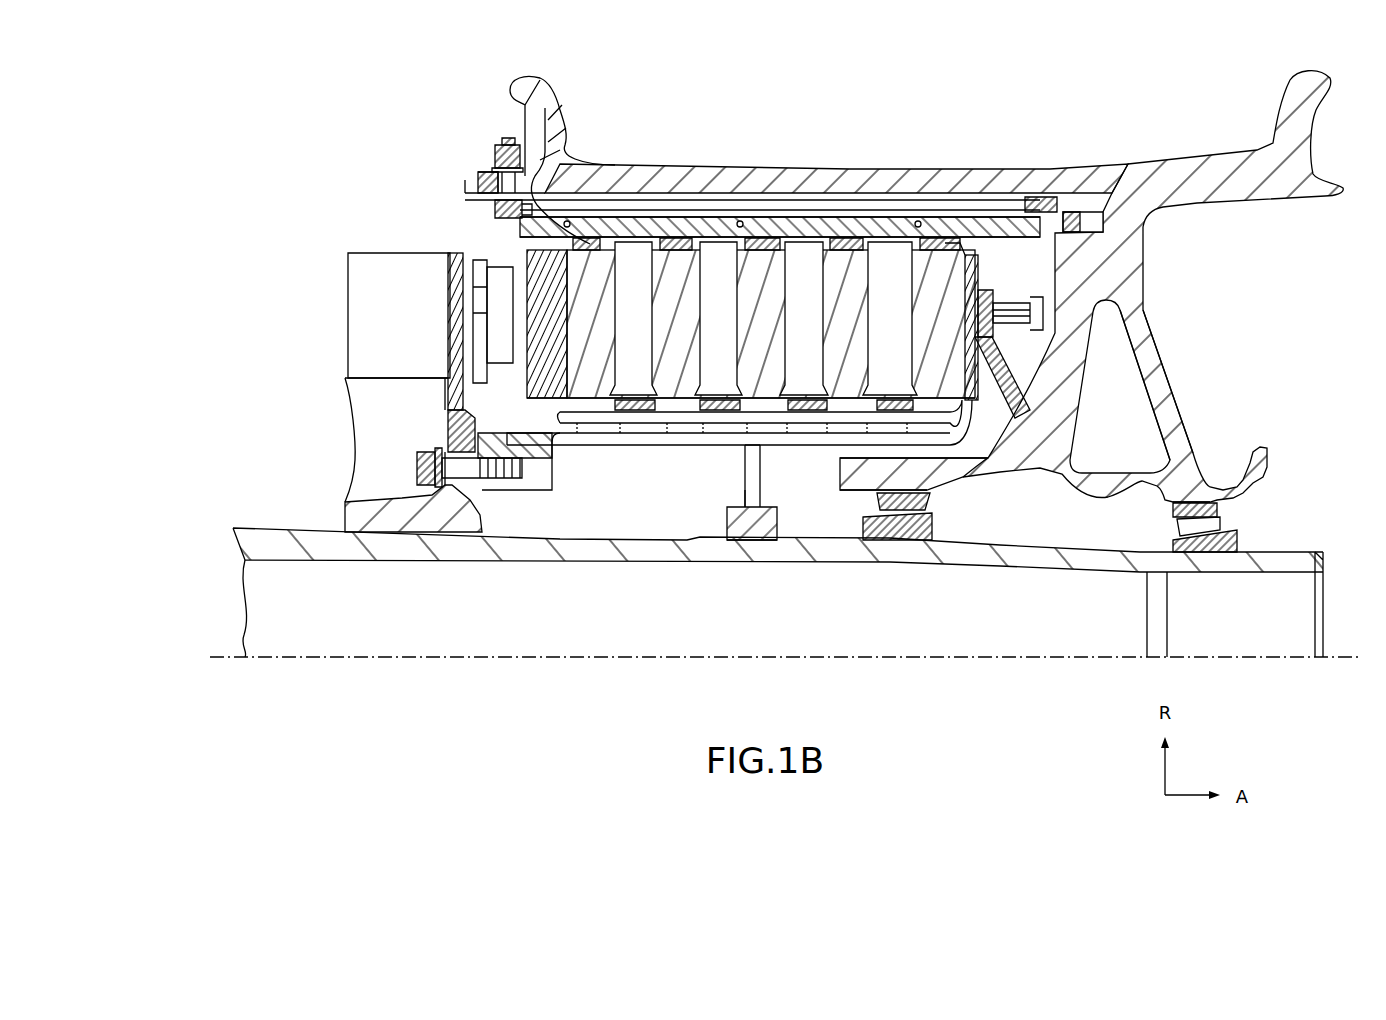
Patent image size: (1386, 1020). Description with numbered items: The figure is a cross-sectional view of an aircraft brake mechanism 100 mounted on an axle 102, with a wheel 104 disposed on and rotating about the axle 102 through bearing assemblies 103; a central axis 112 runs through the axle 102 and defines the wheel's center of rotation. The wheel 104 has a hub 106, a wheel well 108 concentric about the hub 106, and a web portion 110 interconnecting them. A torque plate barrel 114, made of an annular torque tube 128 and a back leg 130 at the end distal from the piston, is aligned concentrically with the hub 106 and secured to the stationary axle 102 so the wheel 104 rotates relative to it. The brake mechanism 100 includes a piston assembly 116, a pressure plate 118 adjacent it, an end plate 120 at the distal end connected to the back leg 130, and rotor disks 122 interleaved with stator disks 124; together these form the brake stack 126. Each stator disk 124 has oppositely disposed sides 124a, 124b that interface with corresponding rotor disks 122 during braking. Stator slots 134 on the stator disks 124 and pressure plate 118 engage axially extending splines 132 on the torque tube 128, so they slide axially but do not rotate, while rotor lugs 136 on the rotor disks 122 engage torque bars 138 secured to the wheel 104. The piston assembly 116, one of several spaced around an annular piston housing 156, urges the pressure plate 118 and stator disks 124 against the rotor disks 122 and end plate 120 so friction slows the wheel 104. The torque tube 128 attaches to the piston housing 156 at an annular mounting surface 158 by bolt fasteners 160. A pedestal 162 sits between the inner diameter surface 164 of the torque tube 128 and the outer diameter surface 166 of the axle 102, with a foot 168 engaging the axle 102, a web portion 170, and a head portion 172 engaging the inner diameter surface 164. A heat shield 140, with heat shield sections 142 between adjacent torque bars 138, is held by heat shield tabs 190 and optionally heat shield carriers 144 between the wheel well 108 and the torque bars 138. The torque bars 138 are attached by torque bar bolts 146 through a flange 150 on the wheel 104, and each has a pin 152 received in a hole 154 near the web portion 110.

The brake mechanism 100 is at (347, 137).
The axle 102 is at (1033, 565).
The bearing assemblies 103 is at (1210, 523).
The wheel 104 is at (1163, 304).
The hub 106 is at (1010, 482).
The wheel well 108 is at (1050, 170).
The web portion 110 is at (1165, 368).
The central axis 112 is at (993, 660).
The torque plate barrel 114 is at (612, 453).
The piston assembly 116 is at (427, 233).
The pressure plate 118 is at (516, 248).
The end plate 120 is at (970, 258).
The rotor disks 122 is at (592, 258).
The stator disks 124 is at (715, 252).
The side of stator disk 124a is at (610, 292).
The side of stator disk 124b is at (520, 347).
The brake stack 126 is at (853, 263).
The torque tube 128 is at (575, 448).
The back leg 130 is at (983, 377).
The splines 132 is at (505, 428).
The stator slots 134 is at (832, 436).
The rotor lugs 136 is at (658, 225).
The torque bars 138 is at (978, 226).
The heat shield 140 is at (758, 197).
The heat shield sections 142 is at (849, 200).
The heat shield carriers 144 is at (560, 160).
The torque bar bolts 146 is at (505, 137).
The flange 150 is at (478, 175).
The pin 152 is at (1058, 208).
The hole 154 is at (1083, 220).
The annular piston housing 156 is at (348, 256).
The annular mounting surface 158 is at (517, 490).
The bolt fasteners 160 is at (415, 467).
The pedestal 162 is at (738, 474).
The inner diameter surface 164 is at (650, 447).
The outer diameter surface 166 is at (780, 534).
The foot 168 is at (778, 508).
The web portion 170 is at (745, 494).
The head portion 172 is at (742, 446).
The heat shield tabs 190 is at (1040, 245).